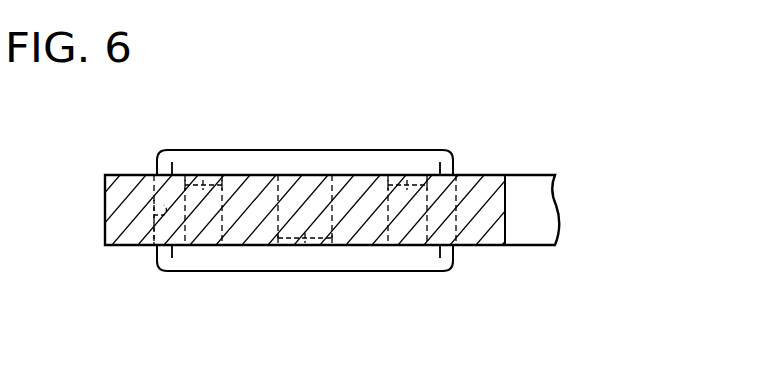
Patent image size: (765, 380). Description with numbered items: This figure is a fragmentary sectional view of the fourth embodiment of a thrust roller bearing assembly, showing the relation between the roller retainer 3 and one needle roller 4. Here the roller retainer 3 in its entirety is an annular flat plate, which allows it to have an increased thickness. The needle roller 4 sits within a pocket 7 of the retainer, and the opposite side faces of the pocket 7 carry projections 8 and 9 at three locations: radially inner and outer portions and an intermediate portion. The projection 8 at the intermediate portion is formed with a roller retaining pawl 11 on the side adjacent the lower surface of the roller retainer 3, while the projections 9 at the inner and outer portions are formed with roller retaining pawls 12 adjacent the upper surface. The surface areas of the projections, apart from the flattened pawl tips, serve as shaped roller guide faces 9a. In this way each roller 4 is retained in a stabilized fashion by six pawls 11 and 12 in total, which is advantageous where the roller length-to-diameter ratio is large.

The roller retainer 3 is at (130, 175).
The needle roller 4 is at (360, 170).
The pocket 7 is at (153, 268).
The projection 8 is at (305, 247).
The projection 9 is at (201, 247).
The roller guide face 9a is at (221, 248).
The roller retaining pawl 11 is at (291, 250).
The roller retaining pawl 12 is at (204, 184).